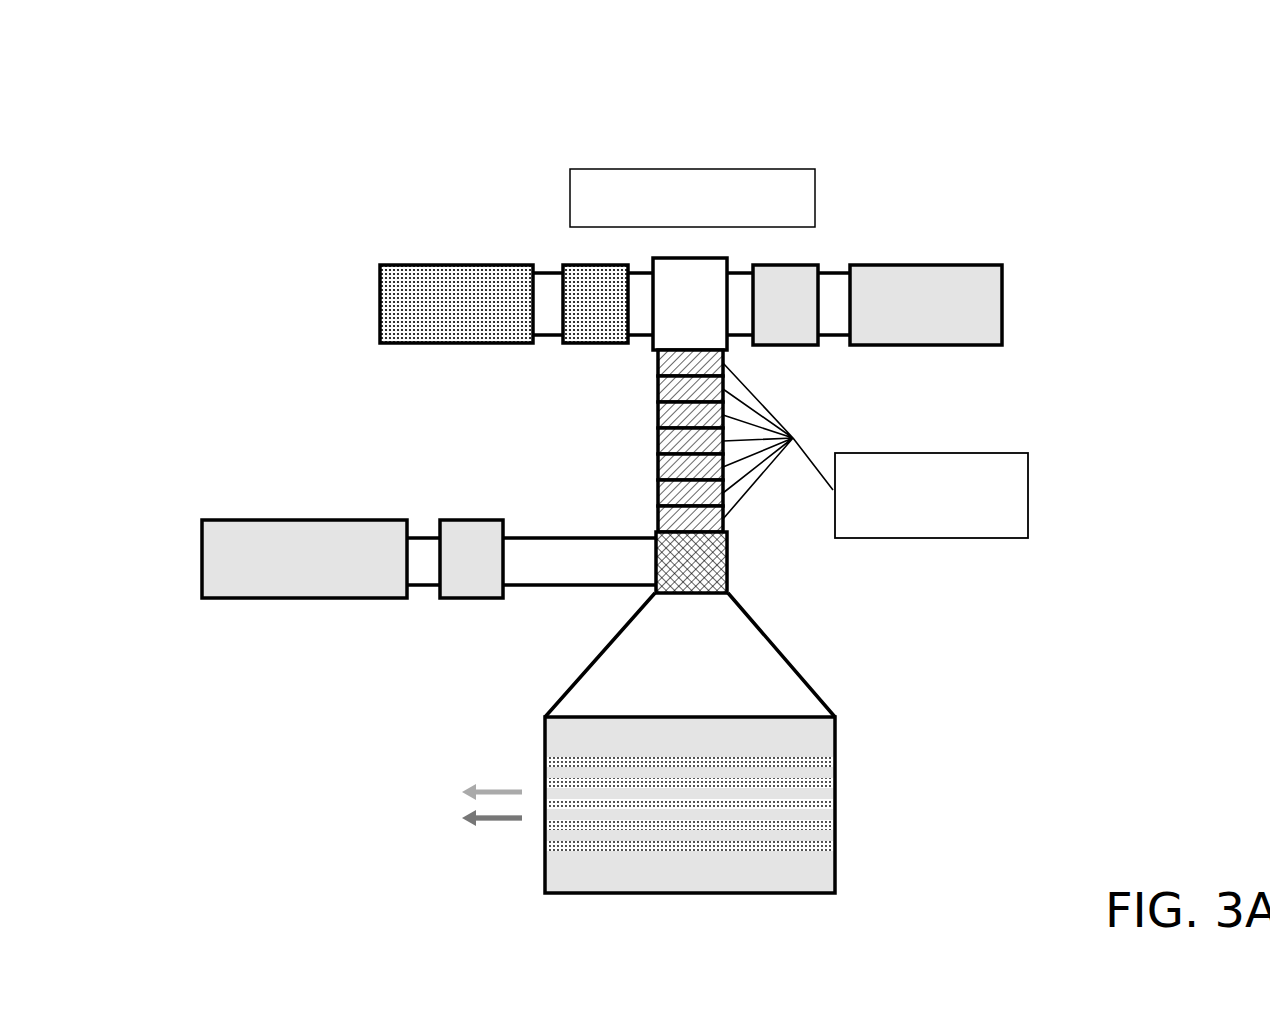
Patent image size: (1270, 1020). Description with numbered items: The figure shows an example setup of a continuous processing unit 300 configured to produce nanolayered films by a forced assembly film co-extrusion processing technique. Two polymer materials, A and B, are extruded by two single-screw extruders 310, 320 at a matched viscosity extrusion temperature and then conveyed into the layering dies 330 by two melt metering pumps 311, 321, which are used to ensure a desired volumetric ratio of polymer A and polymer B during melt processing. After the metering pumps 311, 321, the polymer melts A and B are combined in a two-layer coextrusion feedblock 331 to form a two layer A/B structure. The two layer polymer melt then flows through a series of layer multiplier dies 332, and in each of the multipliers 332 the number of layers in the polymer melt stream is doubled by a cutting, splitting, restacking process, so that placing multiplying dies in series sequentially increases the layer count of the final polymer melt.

The continuous processing unit 300 is at (592, 125).
The single-screw extruder 310 is at (460, 343).
The melt metering pump 311 is at (598, 343).
The single-screw extruder 320 is at (925, 345).
The melt metering pump 321 is at (785, 345).
The layering dies 330 is at (1043, 344).
The two-layer coextrusion feedblock 331 is at (685, 258).
The layer multiplier dies 332 is at (928, 538).